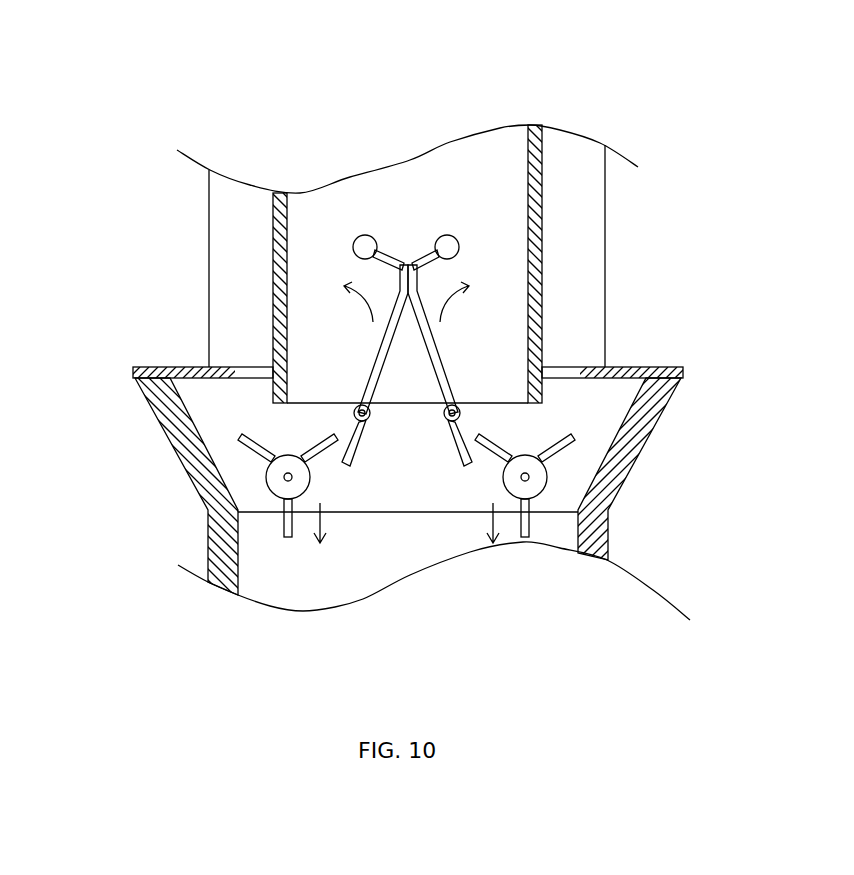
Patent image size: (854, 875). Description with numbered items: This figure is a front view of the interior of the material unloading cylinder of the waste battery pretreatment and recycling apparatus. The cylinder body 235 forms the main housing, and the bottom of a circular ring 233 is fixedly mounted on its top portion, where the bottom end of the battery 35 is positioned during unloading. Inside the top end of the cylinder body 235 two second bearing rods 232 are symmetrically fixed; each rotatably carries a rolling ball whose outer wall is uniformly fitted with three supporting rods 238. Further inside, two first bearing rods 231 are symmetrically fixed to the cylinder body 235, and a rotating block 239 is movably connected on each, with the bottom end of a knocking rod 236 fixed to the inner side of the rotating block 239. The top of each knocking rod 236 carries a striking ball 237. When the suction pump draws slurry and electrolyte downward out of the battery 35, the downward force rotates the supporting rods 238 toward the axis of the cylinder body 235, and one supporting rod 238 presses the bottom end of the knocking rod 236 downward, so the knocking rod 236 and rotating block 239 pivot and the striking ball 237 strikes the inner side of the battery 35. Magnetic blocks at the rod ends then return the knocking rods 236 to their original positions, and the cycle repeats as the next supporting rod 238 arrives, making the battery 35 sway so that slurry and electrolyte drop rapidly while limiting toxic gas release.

The battery 35 is at (540, 147).
The first bearing rod 231 is at (456, 406).
The second bearing rod 232 is at (525, 477).
The circular ring 233 is at (143, 367).
The cylinder body 235 is at (208, 580).
The knocking rod 236 is at (373, 357).
The striking ball 237 is at (358, 241).
The supporting rod 238 is at (262, 462).
The rotating block 239 is at (356, 408).